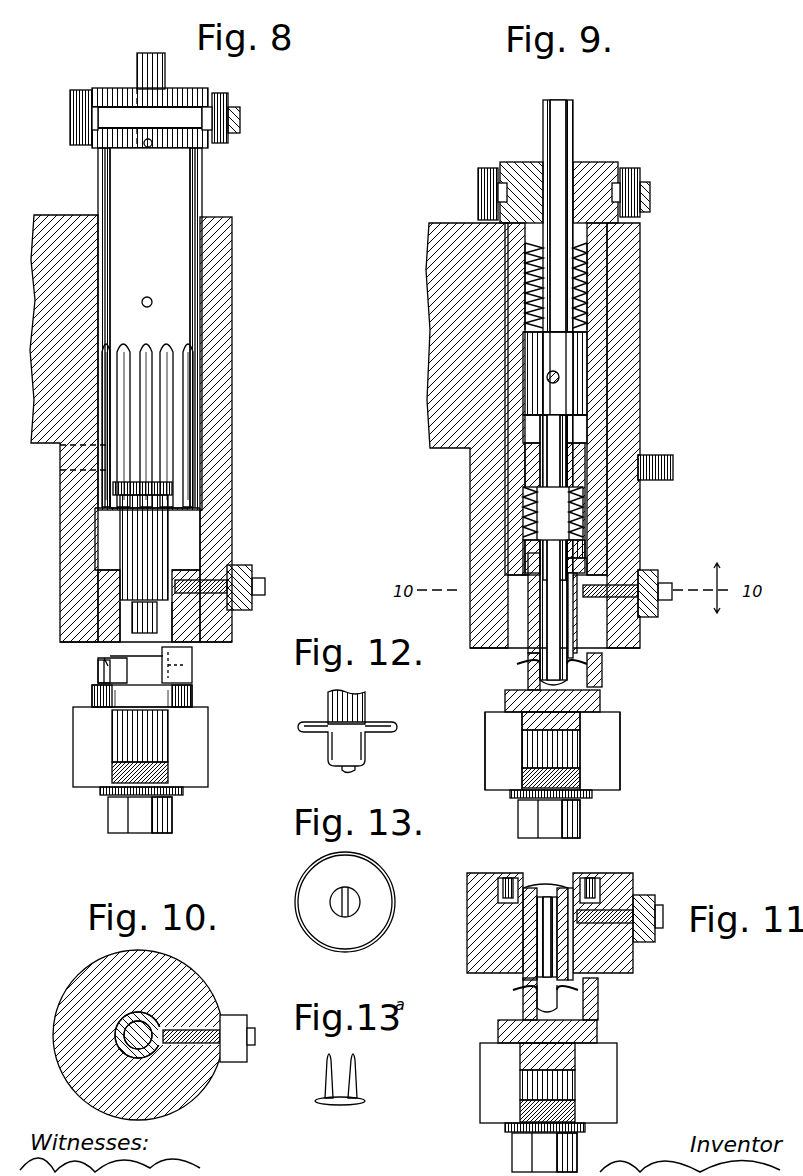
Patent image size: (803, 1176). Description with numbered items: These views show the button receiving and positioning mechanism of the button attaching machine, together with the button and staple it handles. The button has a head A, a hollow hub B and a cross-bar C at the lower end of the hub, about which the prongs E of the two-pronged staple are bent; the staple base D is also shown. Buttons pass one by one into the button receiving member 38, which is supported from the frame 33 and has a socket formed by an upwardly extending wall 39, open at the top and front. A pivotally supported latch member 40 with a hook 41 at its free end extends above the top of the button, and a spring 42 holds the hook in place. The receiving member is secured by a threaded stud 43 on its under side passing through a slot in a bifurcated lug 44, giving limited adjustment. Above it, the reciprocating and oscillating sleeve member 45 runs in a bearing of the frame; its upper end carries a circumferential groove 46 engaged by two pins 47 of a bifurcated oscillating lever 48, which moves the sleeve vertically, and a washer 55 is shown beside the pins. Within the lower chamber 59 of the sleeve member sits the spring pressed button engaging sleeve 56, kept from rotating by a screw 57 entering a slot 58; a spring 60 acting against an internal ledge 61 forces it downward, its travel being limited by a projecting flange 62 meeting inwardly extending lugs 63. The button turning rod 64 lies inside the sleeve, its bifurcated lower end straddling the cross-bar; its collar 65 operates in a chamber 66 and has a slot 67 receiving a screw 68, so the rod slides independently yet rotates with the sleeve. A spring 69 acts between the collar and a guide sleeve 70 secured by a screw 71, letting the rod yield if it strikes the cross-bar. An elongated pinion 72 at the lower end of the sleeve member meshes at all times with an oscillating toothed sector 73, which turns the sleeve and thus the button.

In FIG. 8, the frame 33 is at (56, 326).
In FIG. 9, the frame 33 is at (455, 337).
In FIG. 8, the button receiving member 38 is at (183, 697).
In FIG. 9, the button receiving member 38 is at (600, 700).
In FIG. 11, the button receiving member 38 is at (597, 1032).
In FIG. 8, the upwardly extending wall 39 is at (98, 675).
In FIG. 9, the upwardly extending wall 39 is at (528, 672).
In FIG. 11, the upwardly extending wall 39 is at (523, 1002).
In FIG. 9, the latch member 40 is at (602, 670).
In FIG. 11, the latch member 40 is at (598, 1000).
In FIG. 8, the hook 41 is at (192, 670).
In FIG. 8, the spring 42 is at (100, 660).
In FIG. 8, the threaded stud 43 is at (150, 745).
In FIG. 9, the threaded stud 43 is at (560, 748).
In FIG. 11, the threaded stud 43 is at (558, 1080).
In FIG. 9, the bifurcated lug 44 is at (552, 751).
In FIG. 8, the sleeve member 45 is at (180, 212).
In FIG. 9, the sleeve member 45 is at (598, 280).
In FIG. 11, the sleeve member 45 is at (518, 882).
In FIG. 8, the circumferentially extending groove 46 is at (172, 116).
In FIG. 9, the circumferentially extending groove 46 is at (626, 160).
In FIG. 8, the pins 47 is at (92, 118).
In FIG. 9, the pins 47 is at (498, 190).
In FIG. 8, the bifurcated oscillating lever 48 is at (72, 108).
In FIG. 9, the bifurcated oscillating lever 48 is at (484, 165).
In FIG. 8, the washer 55 is at (240, 118).
In FIG. 9, the washer 55 is at (650, 195).
In FIG. 8, the button engaging sleeve 56 is at (135, 517).
In FIG. 9, the button engaging sleeve 56 is at (530, 580).
In FIG. 11, the button engaging sleeve 56 is at (525, 932).
In FIG. 10, the button engaging sleeve 56 is at (124, 1035).
In FIG. 8, the screw 57 is at (215, 590).
In FIG. 9, the screw 57 is at (635, 600).
In FIG. 11, the screw 57 is at (635, 935).
In FIG. 10, the screw 57 is at (215, 1025).
In FIG. 9, the slot 58 is at (572, 625).
In FIG. 11, the slot 58 is at (572, 950).
In FIG. 10, the slot 58 is at (118, 1047).
In FIG. 9, the chamber 59 is at (580, 505).
In FIG. 11, the chamber 59 is at (588, 880).
In FIG. 9, the spring 60 is at (575, 520).
In FIG. 9, the internal ledge 61 is at (535, 460).
In FIG. 9, the projecting flange 62 is at (582, 550).
In FIG. 9, the inwardly extending lugs 63 is at (590, 565).
In FIG. 11, the inwardly extending lugs 63 is at (548, 872).
In FIG. 9, the button turning rod 64 is at (567, 430).
In FIG. 11, the button turning rod 64 is at (547, 955).
In FIG. 12, the button turning rod 64 is at (350, 712).
In FIG. 9, the collar 65 is at (578, 362).
In FIG. 9, the chamber 66 is at (585, 302).
In FIG. 9, the slot 67 is at (560, 350).
In FIG. 8, the screw 68 is at (149, 297).
In FIG. 9, the screw 68 is at (560, 377).
In FIG. 9, the spring 69 is at (580, 258).
In FIG. 9, the sleeve 70 is at (578, 162).
In FIG. 8, the screw 71 is at (148, 147).
In FIG. 8, the elongated pinion 72 is at (168, 412).
In FIG. 9, the elongated pinion 72 is at (590, 450).
In FIG. 11, the elongated pinion 72 is at (600, 880).
In FIG. 9, the oscillating toothed sector 73 is at (673, 466).
In FIG. 12, the head A is at (375, 724).
In FIG. 13, the head A is at (368, 878).
In FIG. 12, the hollow hub B is at (365, 745).
In FIG. 12, the cross-bar C is at (353, 774).
In FIG. 13, the cross-bar C is at (355, 905).
In FIG. 13A, the fastener base D is at (340, 1114).
In FIG. 13A, the prongs E is at (357, 1063).